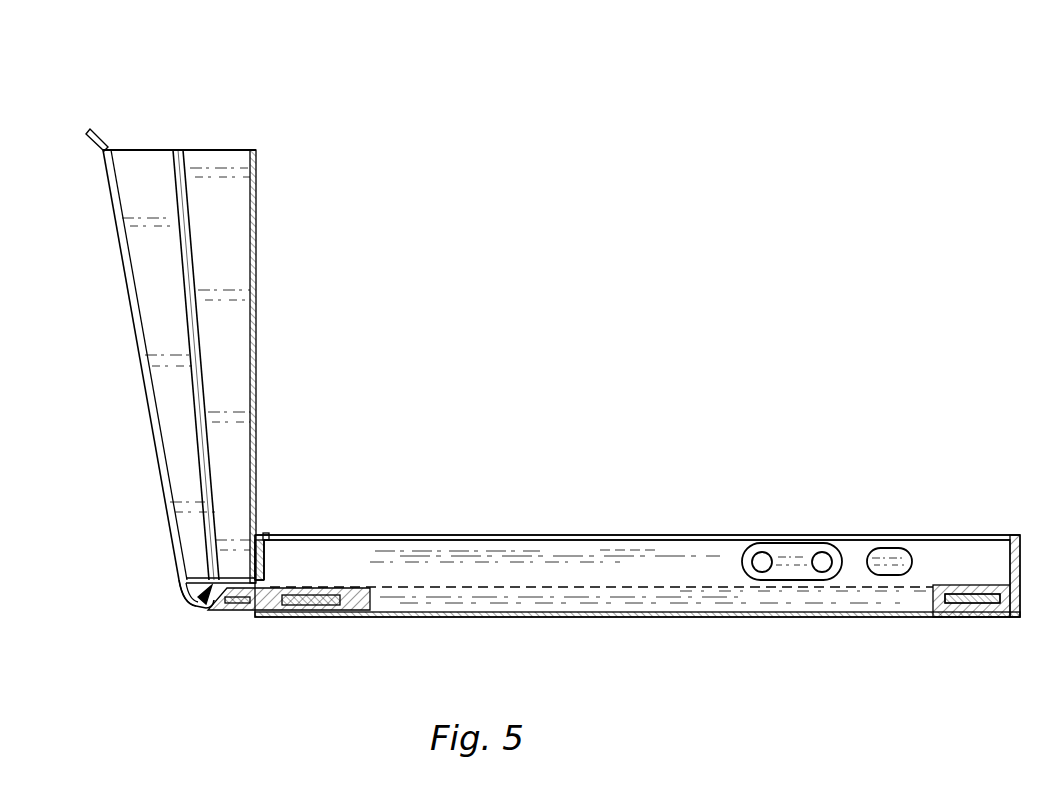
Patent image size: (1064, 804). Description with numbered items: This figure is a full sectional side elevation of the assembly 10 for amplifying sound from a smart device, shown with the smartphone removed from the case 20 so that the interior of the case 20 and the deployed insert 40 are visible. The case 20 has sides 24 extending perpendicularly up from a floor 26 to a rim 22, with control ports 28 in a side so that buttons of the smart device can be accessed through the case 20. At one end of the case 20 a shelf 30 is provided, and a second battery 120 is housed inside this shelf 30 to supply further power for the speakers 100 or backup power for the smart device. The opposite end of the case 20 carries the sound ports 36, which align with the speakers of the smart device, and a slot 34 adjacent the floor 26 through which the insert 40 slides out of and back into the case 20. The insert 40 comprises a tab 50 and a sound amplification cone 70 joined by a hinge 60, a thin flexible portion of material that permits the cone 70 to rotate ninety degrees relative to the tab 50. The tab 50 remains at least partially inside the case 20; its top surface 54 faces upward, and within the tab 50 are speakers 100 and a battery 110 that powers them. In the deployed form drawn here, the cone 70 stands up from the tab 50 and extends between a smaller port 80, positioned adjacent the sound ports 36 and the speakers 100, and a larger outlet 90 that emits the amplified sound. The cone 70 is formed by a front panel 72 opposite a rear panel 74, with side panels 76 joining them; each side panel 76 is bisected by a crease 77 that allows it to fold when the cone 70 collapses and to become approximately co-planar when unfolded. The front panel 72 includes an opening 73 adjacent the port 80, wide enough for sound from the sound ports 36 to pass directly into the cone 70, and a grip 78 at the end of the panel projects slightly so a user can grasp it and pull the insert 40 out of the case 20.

The assembly 10 is at (522, 402).
The case 20 is at (860, 495).
The rim 22 is at (560, 535).
The sides 24 is at (627, 565).
The floor 26 is at (607, 612).
The control ports 28 is at (785, 558).
The shelf 30 is at (975, 585).
The slot 34 is at (268, 583).
The sound ports 36 is at (260, 558).
The insert 40 is at (143, 545).
The tab 50 is at (263, 600).
The top surface 54 is at (343, 588).
The hinge 60 is at (180, 609).
The sound amplification cone 70 is at (270, 330).
The front panel 72 is at (257, 243).
The opening 73 is at (253, 547).
The rear panel 74 is at (145, 387).
The side panels 76 is at (172, 282).
The crease 77 is at (190, 203).
The grip 78 is at (98, 150).
The port 80 is at (195, 608).
The outlet 90 is at (216, 138).
The speakers 100 is at (235, 603).
The battery 110 is at (320, 602).
The second battery 120 is at (963, 598).